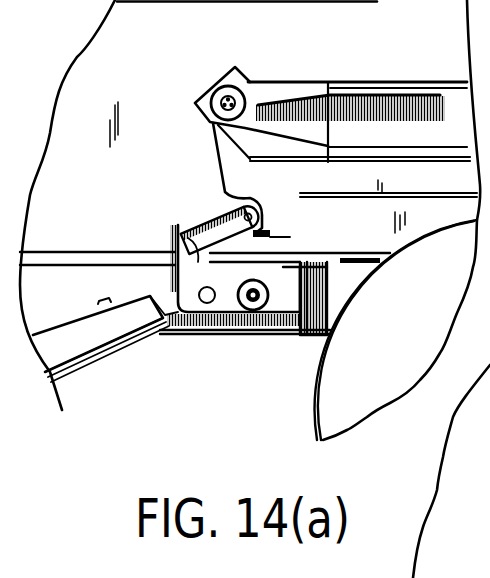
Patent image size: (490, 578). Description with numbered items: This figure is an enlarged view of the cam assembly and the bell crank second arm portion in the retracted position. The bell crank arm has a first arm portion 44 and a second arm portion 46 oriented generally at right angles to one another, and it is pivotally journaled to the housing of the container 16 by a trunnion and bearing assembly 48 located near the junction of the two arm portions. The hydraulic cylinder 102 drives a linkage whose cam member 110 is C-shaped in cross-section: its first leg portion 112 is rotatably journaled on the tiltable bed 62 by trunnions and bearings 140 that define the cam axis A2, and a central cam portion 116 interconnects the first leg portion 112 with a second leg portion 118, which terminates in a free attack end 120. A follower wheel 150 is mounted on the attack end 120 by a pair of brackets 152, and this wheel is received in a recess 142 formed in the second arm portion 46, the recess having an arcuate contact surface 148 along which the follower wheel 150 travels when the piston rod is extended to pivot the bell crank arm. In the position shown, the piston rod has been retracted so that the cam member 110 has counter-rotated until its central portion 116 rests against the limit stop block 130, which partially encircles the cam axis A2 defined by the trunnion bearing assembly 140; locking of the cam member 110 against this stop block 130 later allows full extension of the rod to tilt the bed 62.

The container 16 is at (255, 289).
The first arm portion 44 is at (336, 110).
The second arm portion 46 is at (350, 165).
The trunnion and bearing assembly 48 is at (206, 79).
The tiltable bed 62 is at (396, 330).
The cylinder 102 is at (110, 357).
The cam member 110 is at (162, 282).
The first leg portion 112 is at (245, 366).
The central cam portion 116 is at (205, 268).
The second leg portion 118 is at (145, 208).
The attack end 120 is at (198, 205).
The limit stop block 130 is at (345, 315).
The trunnion and bearing assembly 140 is at (305, 342).
The recess 142 is at (316, 220).
The arcuate contact surface 148 is at (289, 131).
The follower wheel 150 is at (340, 106).
The brackets 152 is at (209, 176).
The cam axis A2 is at (277, 354).